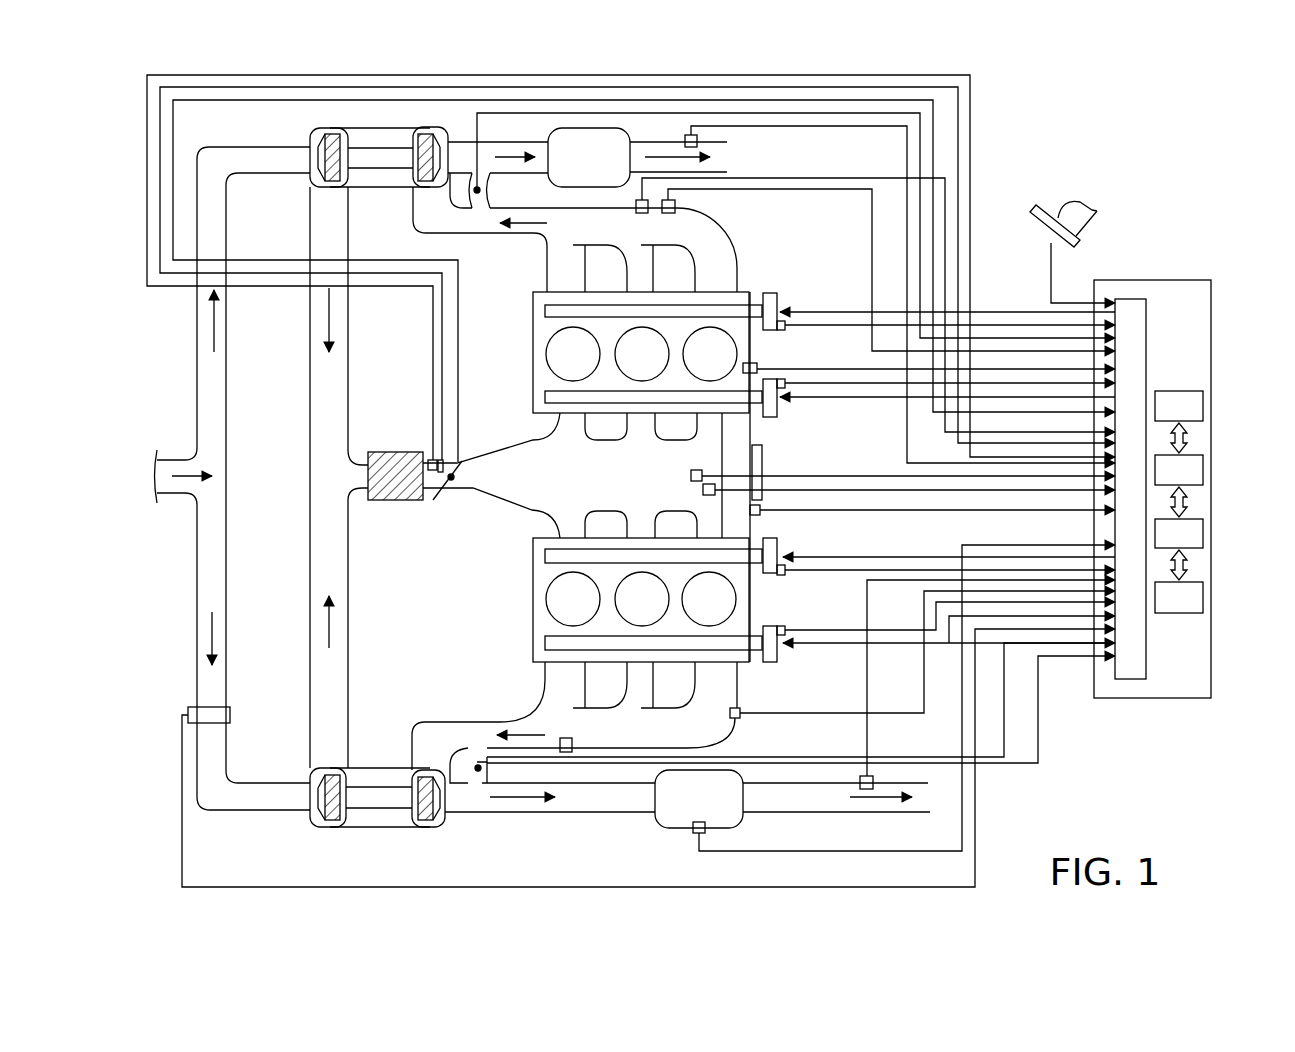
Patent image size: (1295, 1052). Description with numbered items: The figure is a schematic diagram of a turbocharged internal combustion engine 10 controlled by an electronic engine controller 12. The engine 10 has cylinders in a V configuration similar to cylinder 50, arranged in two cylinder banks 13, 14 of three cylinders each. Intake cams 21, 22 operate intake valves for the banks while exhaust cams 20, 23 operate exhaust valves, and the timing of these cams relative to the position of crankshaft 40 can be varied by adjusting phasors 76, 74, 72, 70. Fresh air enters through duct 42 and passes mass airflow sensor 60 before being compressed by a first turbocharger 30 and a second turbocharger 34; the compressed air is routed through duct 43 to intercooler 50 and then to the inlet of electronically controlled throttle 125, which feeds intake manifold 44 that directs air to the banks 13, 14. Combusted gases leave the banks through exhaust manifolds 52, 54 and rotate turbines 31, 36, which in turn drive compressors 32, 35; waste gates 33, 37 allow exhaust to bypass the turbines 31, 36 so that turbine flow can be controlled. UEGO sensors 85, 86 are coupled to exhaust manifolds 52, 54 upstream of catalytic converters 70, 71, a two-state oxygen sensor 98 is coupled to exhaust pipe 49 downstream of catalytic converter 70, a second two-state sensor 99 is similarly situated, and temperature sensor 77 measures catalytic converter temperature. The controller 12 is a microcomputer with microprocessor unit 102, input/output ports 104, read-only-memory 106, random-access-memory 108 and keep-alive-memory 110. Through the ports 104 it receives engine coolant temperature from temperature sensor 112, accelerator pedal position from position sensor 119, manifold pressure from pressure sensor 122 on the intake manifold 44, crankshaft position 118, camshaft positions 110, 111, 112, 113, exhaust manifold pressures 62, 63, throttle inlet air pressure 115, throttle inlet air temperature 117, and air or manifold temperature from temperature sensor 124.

The internal combustion engine 10 is at (750, 422).
The electronic engine controller 12 is at (1140, 700).
The cylinder bank 13 is at (752, 664).
The cylinder bank 14 is at (752, 290).
The exhaust cam 20 is at (545, 308).
The intake cam 21 is at (545, 397).
The intake cam 22 is at (545, 556).
The exhaust cam 23 is at (545, 643).
The first turbocharger 30 is at (378, 827).
The turbine 31 is at (440, 820).
The compressor 32 is at (312, 820).
The waste gate 33 is at (490, 782).
The second turbocharger 34 is at (378, 188).
The compressor 35 is at (330, 136).
The turbine 36 is at (437, 135).
The waste gate 37 is at (483, 192).
The crankshaft 40 is at (762, 472).
The duct 42 is at (233, 478).
The duct 43 is at (339, 477).
The intake manifold 44 is at (560, 475).
The exhaust pipe 49 is at (836, 797).
The cylinder / intercooler 50 is at (735, 595).
The exhaust manifold 52 is at (518, 708).
The exhaust manifold 54 is at (735, 236).
The mass airflow sensor 60 is at (190, 712).
The exhaust manifold pressure sensor 62 is at (745, 716).
The exhaust manifold pressure sensor 63 is at (675, 206).
The catalytic converter 70 is at (780, 655).
The catalytic converter 71 is at (587, 168).
The phasor 72 is at (780, 545).
The phasor 74 is at (780, 410).
The phasor 76 is at (780, 302).
The temperature sensor 77 is at (693, 830).
The UEGO sensor 85 is at (572, 744).
The UEGO sensor 86 is at (636, 206).
The two-state exhaust gas oxygen sensor 98 is at (873, 780).
The two-state oxygen sensor 99 is at (685, 140).
The microprocessor unit 102 is at (1203, 470).
The input/output ports 104 is at (1150, 680).
The read-only-memory 106 is at (1180, 391).
The random-access-memory 108 is at (1203, 535).
The keep-alive-memory 110 is at (1180, 613).
The camshaft position sensor 111 is at (785, 385).
The temperature sensor 112 is at (758, 368).
The camshaft position sensor 113 is at (785, 628).
The throttle inlet air pressure sensor 115 is at (437, 498).
The throttle inlet air temperature sensor 117 is at (432, 458).
The crankshaft position sensor 118 is at (760, 512).
The position sensor 119 is at (1085, 243).
The pressure sensor 122 is at (691, 475).
The temperature sensor 124 is at (703, 490).
The electronically controlled throttle 125 is at (445, 460).